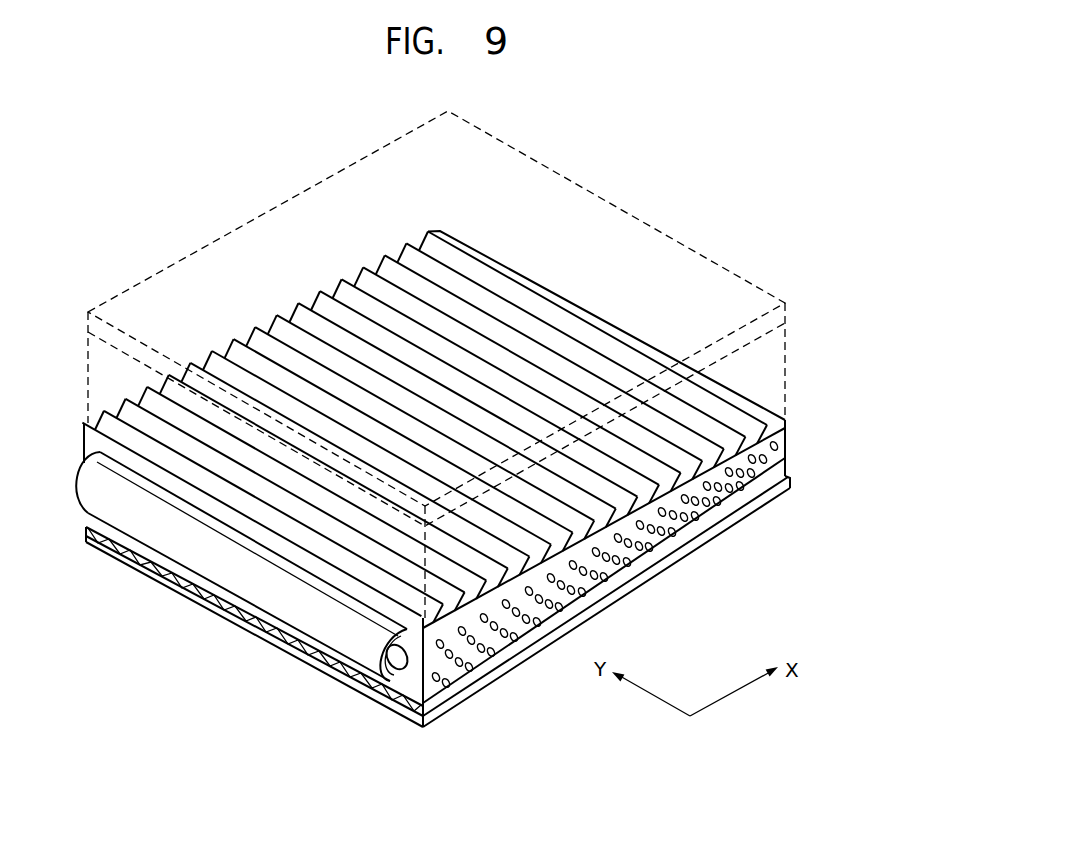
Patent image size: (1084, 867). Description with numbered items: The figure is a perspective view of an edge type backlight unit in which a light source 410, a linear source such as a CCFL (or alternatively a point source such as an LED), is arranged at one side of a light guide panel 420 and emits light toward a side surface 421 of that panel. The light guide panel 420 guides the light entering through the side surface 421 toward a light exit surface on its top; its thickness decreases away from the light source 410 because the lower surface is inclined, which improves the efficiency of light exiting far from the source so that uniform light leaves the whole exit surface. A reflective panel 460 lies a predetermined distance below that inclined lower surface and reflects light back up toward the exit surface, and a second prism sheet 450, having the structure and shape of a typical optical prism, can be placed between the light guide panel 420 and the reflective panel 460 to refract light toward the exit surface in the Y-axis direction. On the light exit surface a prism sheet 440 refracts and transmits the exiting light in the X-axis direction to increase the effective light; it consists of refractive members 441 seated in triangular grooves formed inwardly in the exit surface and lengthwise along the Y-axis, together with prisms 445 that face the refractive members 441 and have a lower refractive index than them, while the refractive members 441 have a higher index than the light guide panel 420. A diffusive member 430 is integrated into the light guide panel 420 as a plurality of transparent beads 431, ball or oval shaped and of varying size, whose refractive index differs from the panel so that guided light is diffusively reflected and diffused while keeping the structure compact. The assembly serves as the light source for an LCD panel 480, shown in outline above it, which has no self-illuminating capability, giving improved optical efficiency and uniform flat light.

The light source 410 is at (374, 683).
The light guide panel 420 is at (480, 569).
The side surface 421 is at (418, 658).
The diffusive member 430 is at (796, 458).
The beads 431 is at (790, 479).
The prism sheet 440 is at (509, 429).
The refractive members 441 is at (787, 437).
The prisms 445 is at (787, 423).
The second prism sheet 450 is at (413, 699).
The reflective panel 460 is at (451, 708).
The LCD panel 480 is at (722, 262).